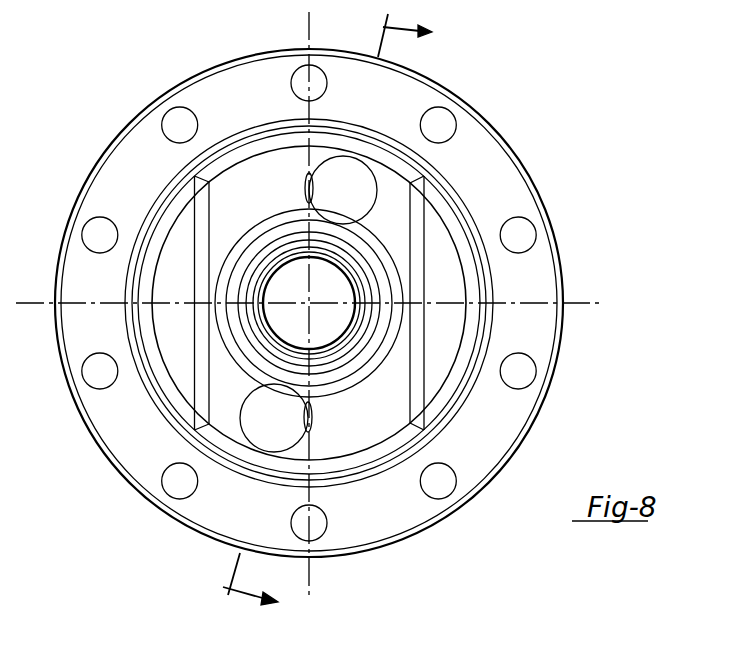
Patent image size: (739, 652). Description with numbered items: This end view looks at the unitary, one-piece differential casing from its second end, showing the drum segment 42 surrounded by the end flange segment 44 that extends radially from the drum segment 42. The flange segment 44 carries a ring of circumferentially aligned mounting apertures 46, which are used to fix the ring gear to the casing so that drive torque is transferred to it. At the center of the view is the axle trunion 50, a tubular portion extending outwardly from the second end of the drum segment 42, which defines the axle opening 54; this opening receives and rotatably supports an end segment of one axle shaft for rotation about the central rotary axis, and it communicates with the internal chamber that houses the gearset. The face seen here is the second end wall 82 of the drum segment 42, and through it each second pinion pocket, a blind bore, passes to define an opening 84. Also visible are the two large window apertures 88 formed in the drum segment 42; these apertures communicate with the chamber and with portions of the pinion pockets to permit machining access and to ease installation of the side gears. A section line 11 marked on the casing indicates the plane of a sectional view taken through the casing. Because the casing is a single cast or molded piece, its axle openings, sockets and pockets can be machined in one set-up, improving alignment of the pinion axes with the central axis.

The section line 11- 11 is at (349, 328).
The drum segment 42 is at (378, 141).
The end flange segment 44 is at (502, 182).
The mounting apertures 46 is at (520, 237).
The axle trunion 50 is at (365, 341).
The axle opening 54 is at (291, 340).
The second end wall 82 is at (265, 176).
The opening 84 is at (345, 193).
The window apertures 88 is at (417, 275).